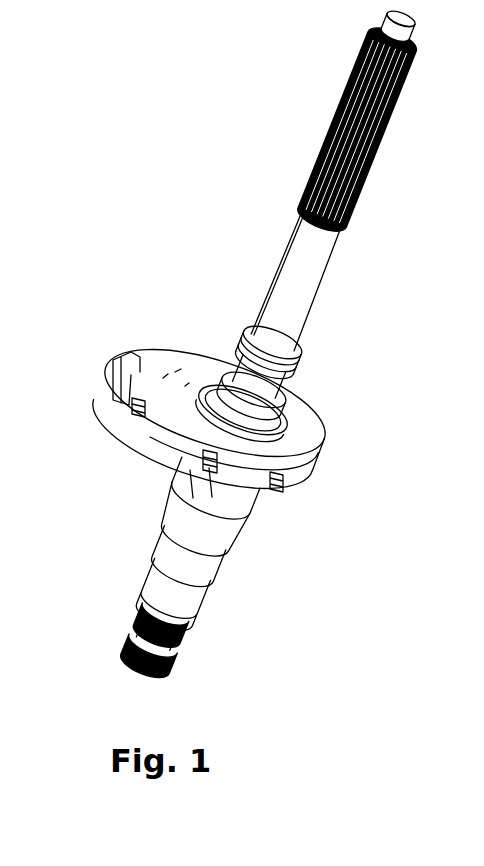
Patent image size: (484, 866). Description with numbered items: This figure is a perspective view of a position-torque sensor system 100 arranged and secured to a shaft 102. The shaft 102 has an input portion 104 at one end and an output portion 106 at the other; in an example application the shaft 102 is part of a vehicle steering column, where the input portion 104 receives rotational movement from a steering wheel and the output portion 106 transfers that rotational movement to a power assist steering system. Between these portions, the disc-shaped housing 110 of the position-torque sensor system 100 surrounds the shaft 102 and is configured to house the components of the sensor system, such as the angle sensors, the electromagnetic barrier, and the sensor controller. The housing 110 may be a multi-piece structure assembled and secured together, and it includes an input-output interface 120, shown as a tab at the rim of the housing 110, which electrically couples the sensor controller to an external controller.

The position-torque sensor system 100 is at (227, 343).
The shaft 102 is at (307, 282).
The input portion 104 is at (313, 402).
The output portion 106 is at (258, 514).
The housing 110 is at (308, 470).
The input-output interface 120 is at (115, 358).